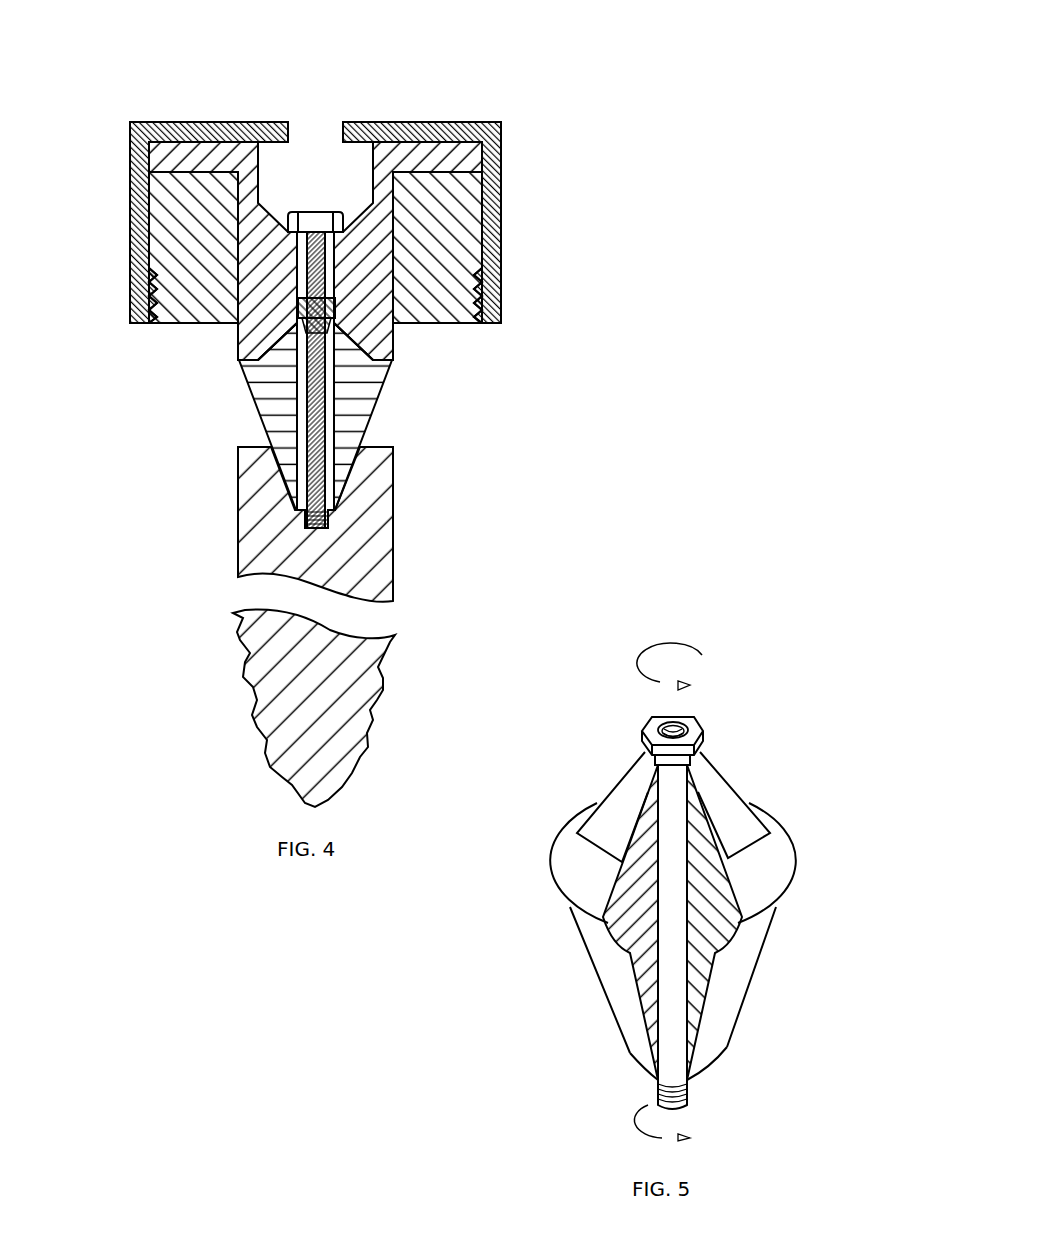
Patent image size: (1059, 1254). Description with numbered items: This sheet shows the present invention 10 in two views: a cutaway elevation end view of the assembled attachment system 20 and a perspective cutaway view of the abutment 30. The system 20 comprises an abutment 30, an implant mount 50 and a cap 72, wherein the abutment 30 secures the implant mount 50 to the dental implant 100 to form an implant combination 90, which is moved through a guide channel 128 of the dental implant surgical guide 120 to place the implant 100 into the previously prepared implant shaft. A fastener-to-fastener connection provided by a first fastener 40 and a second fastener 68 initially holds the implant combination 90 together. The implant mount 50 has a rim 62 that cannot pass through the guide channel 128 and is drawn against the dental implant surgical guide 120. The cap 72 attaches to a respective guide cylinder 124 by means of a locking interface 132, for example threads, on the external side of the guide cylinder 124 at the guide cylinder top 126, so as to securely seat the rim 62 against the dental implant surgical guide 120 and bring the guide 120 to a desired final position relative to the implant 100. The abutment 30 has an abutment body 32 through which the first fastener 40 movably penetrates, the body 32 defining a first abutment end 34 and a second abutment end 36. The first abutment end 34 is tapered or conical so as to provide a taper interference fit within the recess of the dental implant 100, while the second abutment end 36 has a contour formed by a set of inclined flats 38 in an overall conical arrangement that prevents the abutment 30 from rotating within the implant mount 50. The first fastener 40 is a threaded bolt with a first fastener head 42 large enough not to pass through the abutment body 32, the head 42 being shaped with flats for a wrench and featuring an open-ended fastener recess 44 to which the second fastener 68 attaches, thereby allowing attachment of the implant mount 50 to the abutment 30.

In FIG. 4, the present invention 10 is at (520, 117).
In FIG. 4, the attachment system 20 is at (540, 415).
In FIG. 4, the abutment 30 is at (245, 404).
In FIG. 5, the abutment 30 is at (793, 938).
In FIG. 5, the abutment body 32 is at (770, 998).
In FIG. 5, the first abutment end 34 is at (715, 1080).
In FIG. 5, the second abutment end 36 is at (743, 762).
In FIG. 5, the inclined flats 38 is at (618, 802).
In FIG. 4, the first fastener 40 is at (335, 518).
In FIG. 5, the first fastener 40 is at (700, 738).
In FIG. 5, the first fastener head 42 is at (708, 738).
In FIG. 5, the fastener recess 44 is at (667, 722).
In FIG. 4, the implant mount 50 is at (390, 345).
In FIG. 4, the rim 62 is at (207, 140).
In FIG. 4, the second fastener 68 is at (330, 283).
In FIG. 4, the cap 72 is at (500, 134).
In FIG. 4, the implant combination 90 is at (405, 435).
In FIG. 4, the dental implant 100 is at (395, 530).
In FIG. 4, the dental implant surgical guide 120 is at (190, 333).
In FIG. 4, the guide cylinder 124 is at (157, 320).
In FIG. 4, the guide cylinder top 126 is at (150, 181).
In FIG. 4, the guide channel 128 is at (400, 325).
In FIG. 4, the locking interface 132 is at (132, 306).